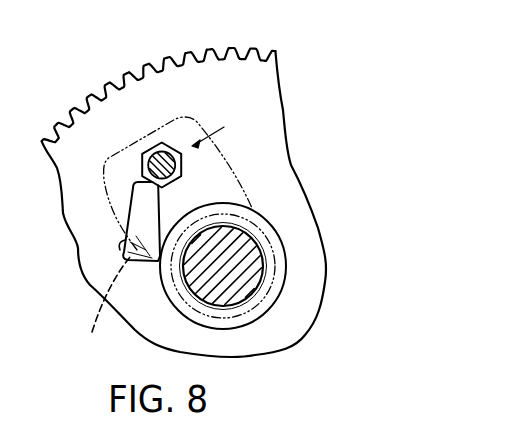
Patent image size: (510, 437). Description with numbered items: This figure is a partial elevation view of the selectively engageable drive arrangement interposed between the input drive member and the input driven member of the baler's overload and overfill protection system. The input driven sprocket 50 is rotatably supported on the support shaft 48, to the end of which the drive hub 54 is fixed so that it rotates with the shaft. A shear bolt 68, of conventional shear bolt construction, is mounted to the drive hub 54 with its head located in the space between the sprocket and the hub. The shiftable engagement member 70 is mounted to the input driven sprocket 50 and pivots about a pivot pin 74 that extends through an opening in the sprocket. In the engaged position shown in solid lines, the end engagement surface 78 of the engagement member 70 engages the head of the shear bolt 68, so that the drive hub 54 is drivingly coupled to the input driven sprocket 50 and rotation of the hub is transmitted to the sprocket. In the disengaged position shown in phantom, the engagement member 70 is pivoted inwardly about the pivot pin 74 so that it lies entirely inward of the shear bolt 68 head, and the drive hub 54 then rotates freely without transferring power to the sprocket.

The input driven sprocket 50 is at (267, 93).
The support shaft 48 is at (250, 253).
The drive hub 54 is at (182, 203).
The shear bolt 68 is at (172, 144).
The shiftable engagement member 70 is at (113, 250).
The pivot pin 74 is at (103, 306).
The end engagement surface 78 is at (232, 173).